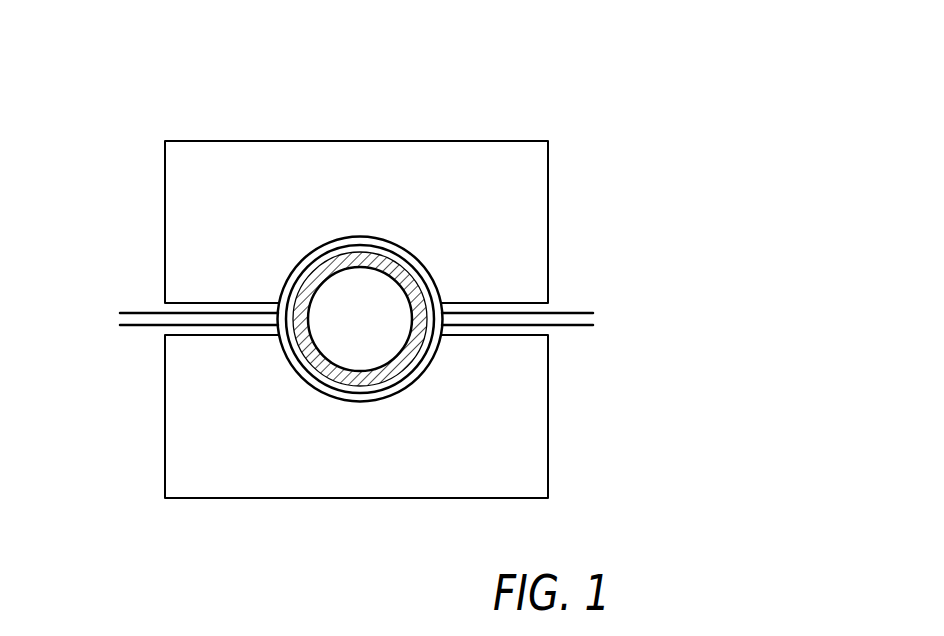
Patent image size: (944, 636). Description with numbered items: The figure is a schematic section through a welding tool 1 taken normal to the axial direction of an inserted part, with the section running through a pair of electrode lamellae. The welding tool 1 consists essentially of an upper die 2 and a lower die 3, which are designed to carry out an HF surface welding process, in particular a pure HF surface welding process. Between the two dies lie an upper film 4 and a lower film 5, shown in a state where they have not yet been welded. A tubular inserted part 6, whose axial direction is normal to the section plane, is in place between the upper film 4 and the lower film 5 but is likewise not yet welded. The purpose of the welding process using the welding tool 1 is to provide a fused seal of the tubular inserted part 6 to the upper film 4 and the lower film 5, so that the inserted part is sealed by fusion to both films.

The welding tool 1 is at (600, 91).
The upper die 2 is at (190, 179).
The lower die 3 is at (510, 458).
The upper film 4 is at (144, 312).
The lower film 5 is at (124, 326).
The tubular inserted part 6 is at (303, 352).